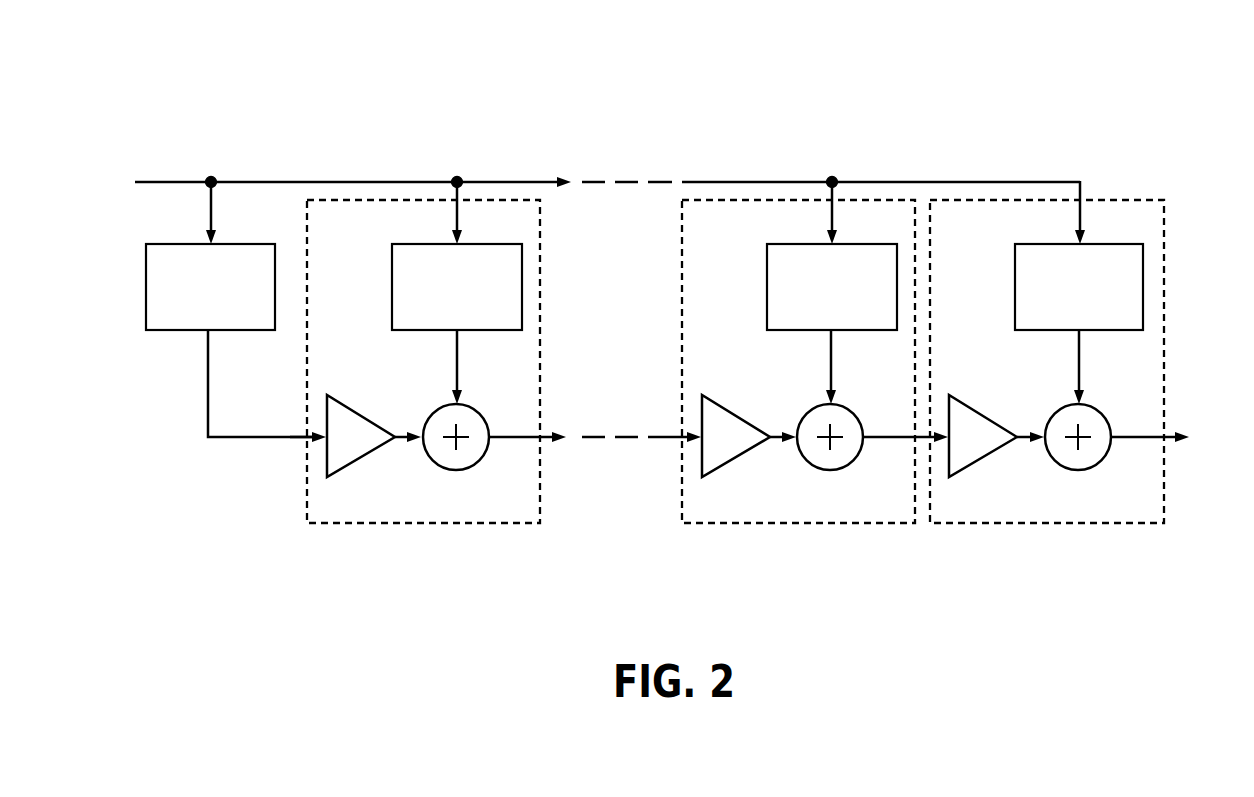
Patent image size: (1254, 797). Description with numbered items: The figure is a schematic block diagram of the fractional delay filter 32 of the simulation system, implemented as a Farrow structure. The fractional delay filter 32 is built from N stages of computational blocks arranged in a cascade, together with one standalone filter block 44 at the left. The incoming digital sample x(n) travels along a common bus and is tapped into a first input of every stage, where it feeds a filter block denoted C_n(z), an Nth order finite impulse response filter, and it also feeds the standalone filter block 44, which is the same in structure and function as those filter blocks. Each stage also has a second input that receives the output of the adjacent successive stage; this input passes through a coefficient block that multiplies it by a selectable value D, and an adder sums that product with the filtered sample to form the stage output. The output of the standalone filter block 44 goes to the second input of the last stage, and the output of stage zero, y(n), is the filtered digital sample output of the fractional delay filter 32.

The fractional delay filter 32 is at (660, 80).
The standalone filter block 44 is at (146, 277).